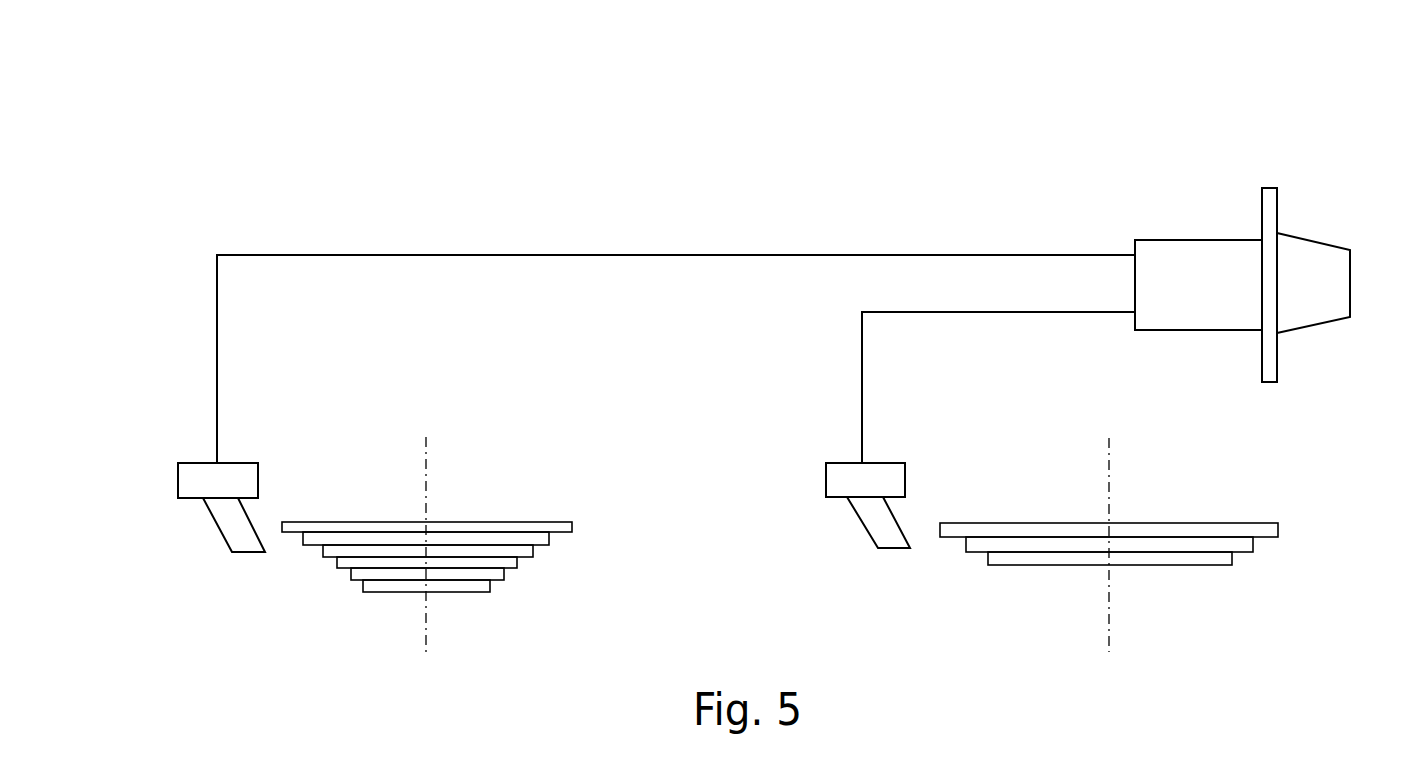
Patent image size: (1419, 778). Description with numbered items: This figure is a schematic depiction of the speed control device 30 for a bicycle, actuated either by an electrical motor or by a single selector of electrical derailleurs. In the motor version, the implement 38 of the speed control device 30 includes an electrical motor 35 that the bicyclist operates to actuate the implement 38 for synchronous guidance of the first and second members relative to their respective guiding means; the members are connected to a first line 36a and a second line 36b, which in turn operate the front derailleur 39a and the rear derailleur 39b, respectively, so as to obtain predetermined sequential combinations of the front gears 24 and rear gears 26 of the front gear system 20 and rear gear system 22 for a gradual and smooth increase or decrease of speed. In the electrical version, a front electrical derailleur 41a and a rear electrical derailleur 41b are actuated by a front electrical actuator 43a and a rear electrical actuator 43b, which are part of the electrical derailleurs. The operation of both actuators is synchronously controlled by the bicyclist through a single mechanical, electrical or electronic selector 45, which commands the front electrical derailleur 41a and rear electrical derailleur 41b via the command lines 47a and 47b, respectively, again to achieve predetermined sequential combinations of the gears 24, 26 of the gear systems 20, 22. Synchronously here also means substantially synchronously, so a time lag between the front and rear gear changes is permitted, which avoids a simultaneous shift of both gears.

The front gear system 20 is at (1119, 596).
The rear gear system 22 is at (405, 601).
The front gears 24 is at (1278, 530).
The rear gears 26 is at (572, 527).
The speed control device 30 is at (1267, 219).
The electrical motor 35 is at (1237, 347).
The first line 36a is at (998, 387).
The second line 36b is at (676, 359).
The implement 38 is at (1249, 219).
The front derailleur 39a is at (816, 533).
The rear derailleur 39b is at (166, 488).
The front electrical derailleur 41a is at (892, 540).
The rear electrical derailleur 41b is at (230, 528).
The front electrical actuator 43a is at (853, 482).
The rear electrical actuator 43b is at (210, 478).
The selector 45 is at (1297, 317).
The front command line 47a is at (863, 385).
The rear command line 47b is at (686, 257).